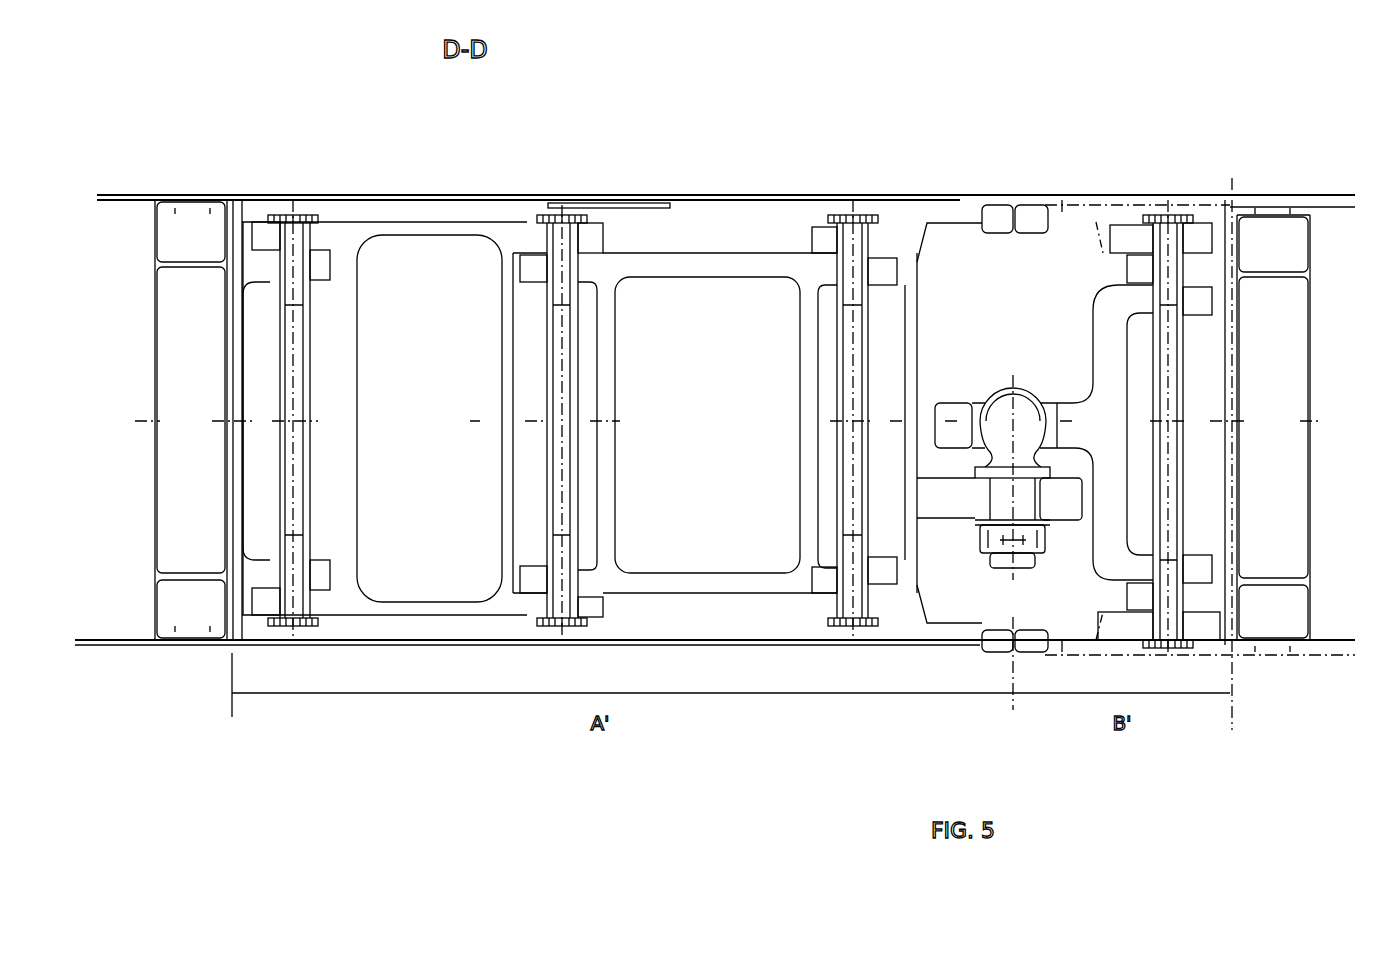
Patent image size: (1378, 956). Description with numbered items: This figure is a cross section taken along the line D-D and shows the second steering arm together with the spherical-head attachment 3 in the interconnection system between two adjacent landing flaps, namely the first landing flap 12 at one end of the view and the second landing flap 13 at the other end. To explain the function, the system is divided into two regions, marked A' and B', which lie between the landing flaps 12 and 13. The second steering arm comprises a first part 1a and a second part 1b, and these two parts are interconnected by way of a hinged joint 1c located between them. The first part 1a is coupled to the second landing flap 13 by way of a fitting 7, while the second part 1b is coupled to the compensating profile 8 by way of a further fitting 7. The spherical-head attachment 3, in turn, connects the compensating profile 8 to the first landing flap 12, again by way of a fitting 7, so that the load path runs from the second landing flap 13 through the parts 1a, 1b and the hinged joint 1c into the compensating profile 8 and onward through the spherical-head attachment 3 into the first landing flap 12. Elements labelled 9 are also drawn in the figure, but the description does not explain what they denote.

The first part 1a is at (407, 225).
The second part 1b is at (705, 258).
The hinged joint 1c is at (563, 183).
The spherical-head attachment 3 is at (1110, 313).
The fitting 7 is at (292, 183).
The compensating profile 8 is at (783, 190).
The rail clamp 9 is at (1005, 213).
The first landing flap 12 is at (1337, 442).
The second landing flap 13 is at (102, 430).